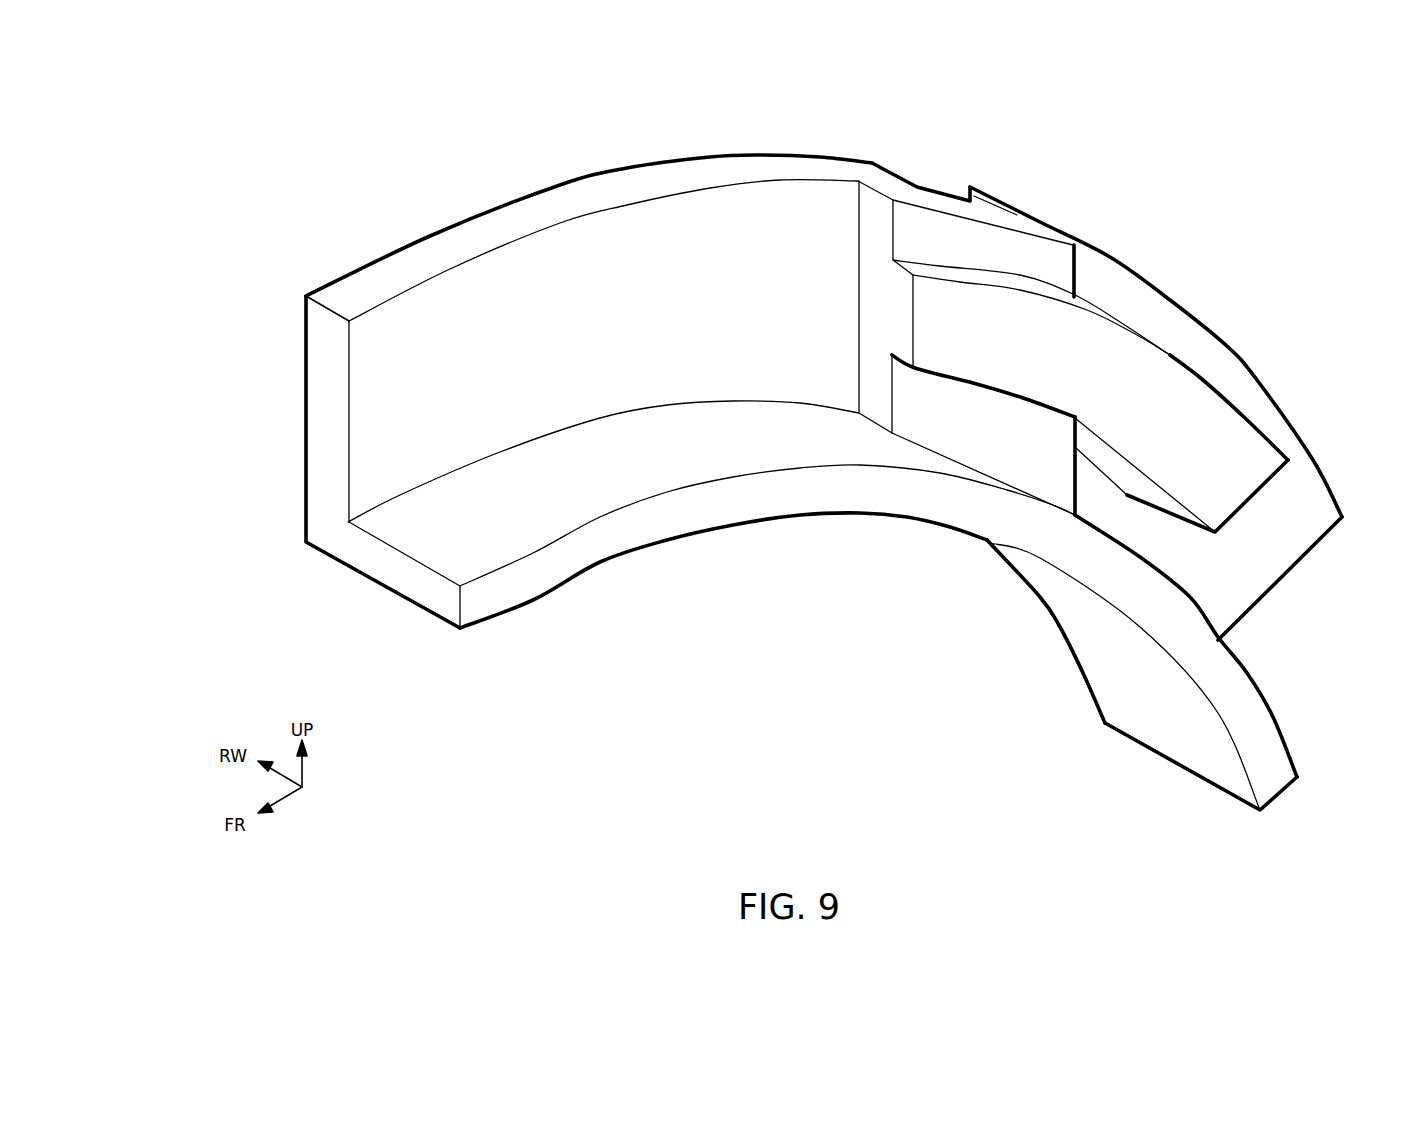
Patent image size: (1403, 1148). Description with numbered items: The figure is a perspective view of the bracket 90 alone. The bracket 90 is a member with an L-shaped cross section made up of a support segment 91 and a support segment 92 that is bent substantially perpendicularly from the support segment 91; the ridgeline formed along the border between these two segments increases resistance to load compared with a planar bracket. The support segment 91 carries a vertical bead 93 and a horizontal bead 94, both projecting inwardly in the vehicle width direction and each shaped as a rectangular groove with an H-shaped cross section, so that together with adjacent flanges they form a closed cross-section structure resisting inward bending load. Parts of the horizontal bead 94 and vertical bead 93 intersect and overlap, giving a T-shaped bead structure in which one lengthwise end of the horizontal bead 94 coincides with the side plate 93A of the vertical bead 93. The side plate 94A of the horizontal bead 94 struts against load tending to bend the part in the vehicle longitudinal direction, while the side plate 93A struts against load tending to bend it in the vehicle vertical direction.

The bracket 90 is at (340, 213).
The support segment 91 is at (552, 208).
The support segment 92 is at (588, 556).
The vertical bead 93 is at (957, 228).
The side plate of the vertical bead 93A is at (870, 229).
The horizontal bead 94 is at (1176, 392).
The side plate of the horizontal bead 94A is at (1048, 291).